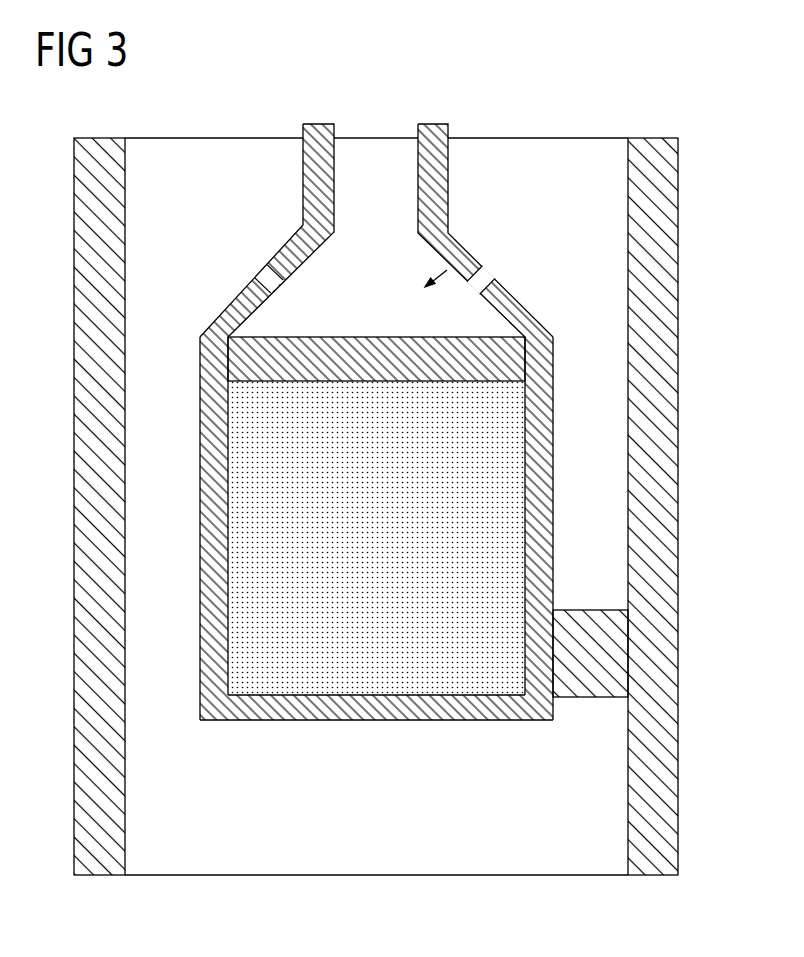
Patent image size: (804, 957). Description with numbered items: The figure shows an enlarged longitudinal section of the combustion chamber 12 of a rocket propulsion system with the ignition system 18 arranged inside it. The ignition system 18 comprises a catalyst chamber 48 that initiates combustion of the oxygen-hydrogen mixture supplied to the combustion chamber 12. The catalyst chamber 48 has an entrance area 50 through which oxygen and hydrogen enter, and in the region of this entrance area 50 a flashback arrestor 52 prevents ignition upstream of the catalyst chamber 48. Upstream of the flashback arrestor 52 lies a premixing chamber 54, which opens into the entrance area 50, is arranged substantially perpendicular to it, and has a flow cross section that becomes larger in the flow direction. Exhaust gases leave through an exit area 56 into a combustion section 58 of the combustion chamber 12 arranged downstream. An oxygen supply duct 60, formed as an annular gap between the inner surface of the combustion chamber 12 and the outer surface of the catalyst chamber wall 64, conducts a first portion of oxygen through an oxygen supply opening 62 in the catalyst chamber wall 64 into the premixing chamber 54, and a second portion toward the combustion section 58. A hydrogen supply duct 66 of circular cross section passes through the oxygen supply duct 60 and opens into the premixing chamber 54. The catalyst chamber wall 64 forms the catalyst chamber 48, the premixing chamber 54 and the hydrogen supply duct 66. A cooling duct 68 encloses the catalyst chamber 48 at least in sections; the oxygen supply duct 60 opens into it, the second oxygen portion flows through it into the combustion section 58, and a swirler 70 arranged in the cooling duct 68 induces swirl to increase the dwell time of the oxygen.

The combustion chamber 12 is at (689, 345).
The ignition system 18 is at (570, 330).
The catalyst chamber 48 is at (510, 456).
The entrance area 50 is at (344, 325).
The flashback arrestor 52 is at (200, 358).
The premixing chamber 54 is at (462, 249).
The exit area 56 is at (299, 735).
The combustion section 58 is at (457, 876).
The oxygen supply duct 60 is at (541, 152).
The oxygen supply opening 62 is at (265, 257).
The catalyst chamber wall 64 is at (433, 128).
The hydrogen supply duct 66 is at (379, 152).
The cooling duct 68 is at (142, 562).
The swirler 70 is at (595, 698).